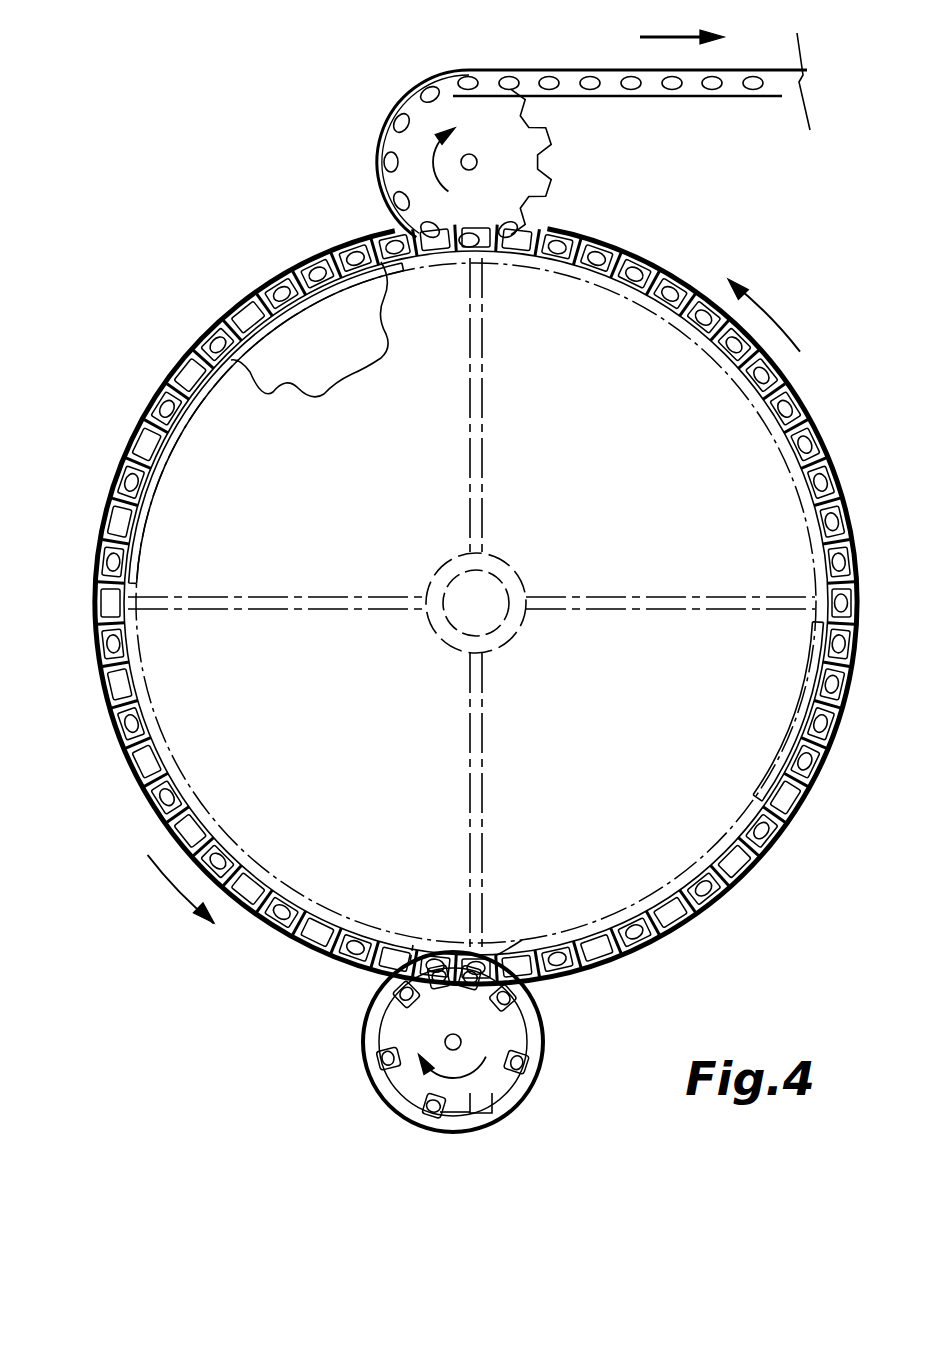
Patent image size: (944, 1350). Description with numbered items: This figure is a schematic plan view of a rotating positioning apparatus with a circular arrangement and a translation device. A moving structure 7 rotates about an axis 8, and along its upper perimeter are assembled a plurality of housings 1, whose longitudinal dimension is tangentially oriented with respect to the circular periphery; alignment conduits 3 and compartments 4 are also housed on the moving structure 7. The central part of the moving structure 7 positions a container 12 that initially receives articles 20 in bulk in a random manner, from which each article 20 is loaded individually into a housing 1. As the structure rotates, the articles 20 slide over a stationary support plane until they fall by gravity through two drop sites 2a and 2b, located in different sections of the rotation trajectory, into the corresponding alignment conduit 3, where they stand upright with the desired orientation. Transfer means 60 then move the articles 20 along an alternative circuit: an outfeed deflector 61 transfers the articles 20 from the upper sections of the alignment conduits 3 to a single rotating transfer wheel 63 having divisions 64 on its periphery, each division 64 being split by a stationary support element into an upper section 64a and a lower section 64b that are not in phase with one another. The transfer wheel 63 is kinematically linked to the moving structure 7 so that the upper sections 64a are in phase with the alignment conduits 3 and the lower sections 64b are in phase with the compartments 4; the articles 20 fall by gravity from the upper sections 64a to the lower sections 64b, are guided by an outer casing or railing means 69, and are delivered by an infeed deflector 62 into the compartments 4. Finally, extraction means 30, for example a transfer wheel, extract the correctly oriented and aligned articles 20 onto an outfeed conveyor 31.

The housing 1 is at (250, 292).
The drop site 2a is at (158, 466).
The drop site 2b is at (804, 708).
The alignment conduit 3 is at (112, 473).
The compartment 4 is at (134, 442).
The moving structure 7 is at (688, 596).
The axis 8 is at (488, 583).
The container 12 is at (370, 358).
The article 20 is at (670, 85).
The extraction means 30 is at (565, 160).
The outfeed conveyor 31 is at (573, 78).
The transfer means 60 is at (300, 1068).
The outfeed deflector 61 is at (497, 955).
The infeed deflector 62 is at (413, 945).
The rotating transfer wheel 63 is at (408, 1032).
The division 64 is at (390, 1090).
The upper section 64a is at (534, 1072).
The lower section 64b is at (426, 1128).
The outer casing or railing means 69 is at (488, 1128).